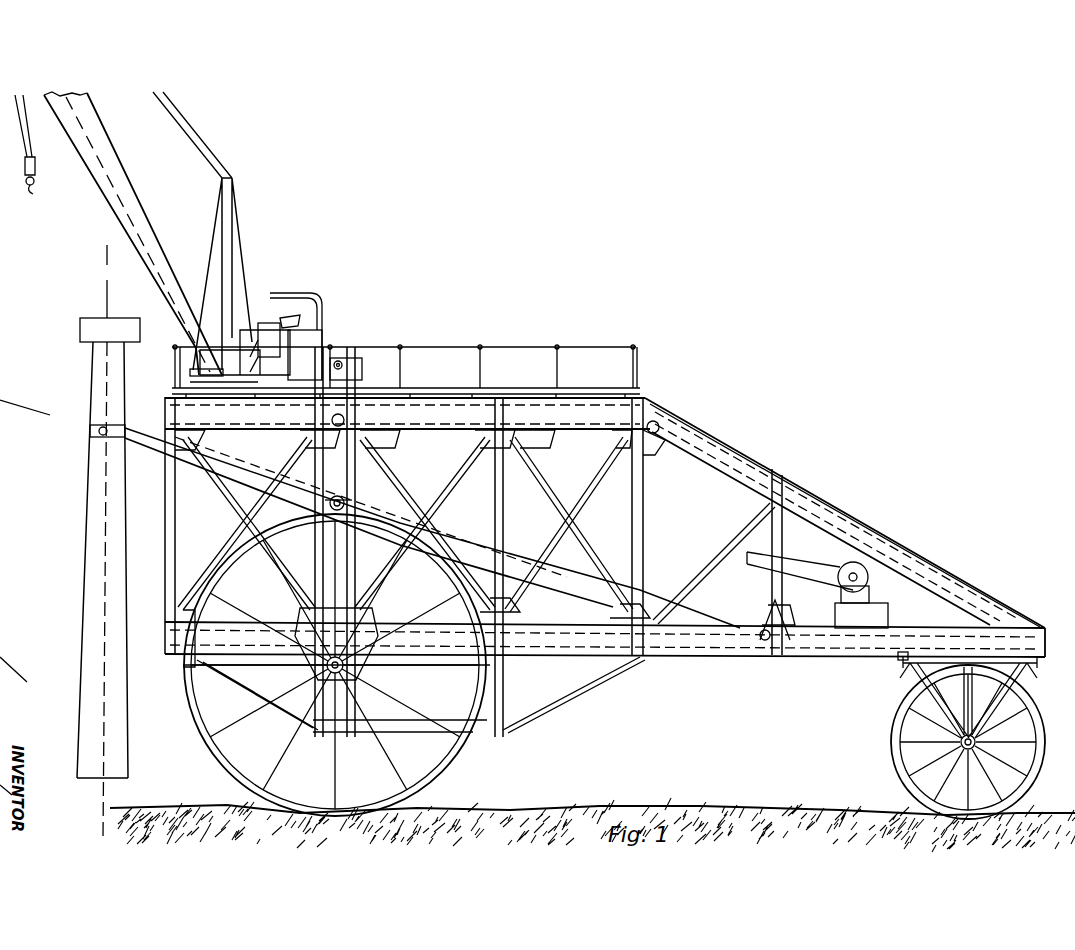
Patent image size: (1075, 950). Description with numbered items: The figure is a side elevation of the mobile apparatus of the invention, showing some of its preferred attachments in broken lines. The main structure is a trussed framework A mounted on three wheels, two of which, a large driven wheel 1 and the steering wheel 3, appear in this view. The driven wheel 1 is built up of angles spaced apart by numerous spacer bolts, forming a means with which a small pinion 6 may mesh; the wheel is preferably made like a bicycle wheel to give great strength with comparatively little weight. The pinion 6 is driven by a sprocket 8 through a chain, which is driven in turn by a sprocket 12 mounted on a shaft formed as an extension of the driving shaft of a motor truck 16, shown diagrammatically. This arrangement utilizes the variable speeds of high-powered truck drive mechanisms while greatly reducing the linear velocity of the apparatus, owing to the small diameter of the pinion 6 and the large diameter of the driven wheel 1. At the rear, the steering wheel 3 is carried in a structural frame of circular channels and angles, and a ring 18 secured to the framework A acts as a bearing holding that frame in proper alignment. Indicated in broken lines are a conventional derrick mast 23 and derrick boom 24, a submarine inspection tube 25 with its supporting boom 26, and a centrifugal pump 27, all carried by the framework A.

The wheel 1 is at (452, 760).
The steering wheel 3 is at (902, 773).
The pinion 6 is at (346, 504).
The sprocket 8 is at (347, 493).
The sprocket 12 is at (346, 360).
The motor truck 16 is at (312, 336).
The ring 18 is at (835, 662).
The derrick mast 23 is at (238, 298).
The derrick boom 24 is at (147, 235).
The submarine inspection tube 25 is at (92, 502).
The supporting boom 26 is at (243, 472).
The centrifugal pump 27 is at (841, 585).
The trussed framework A is at (718, 658).